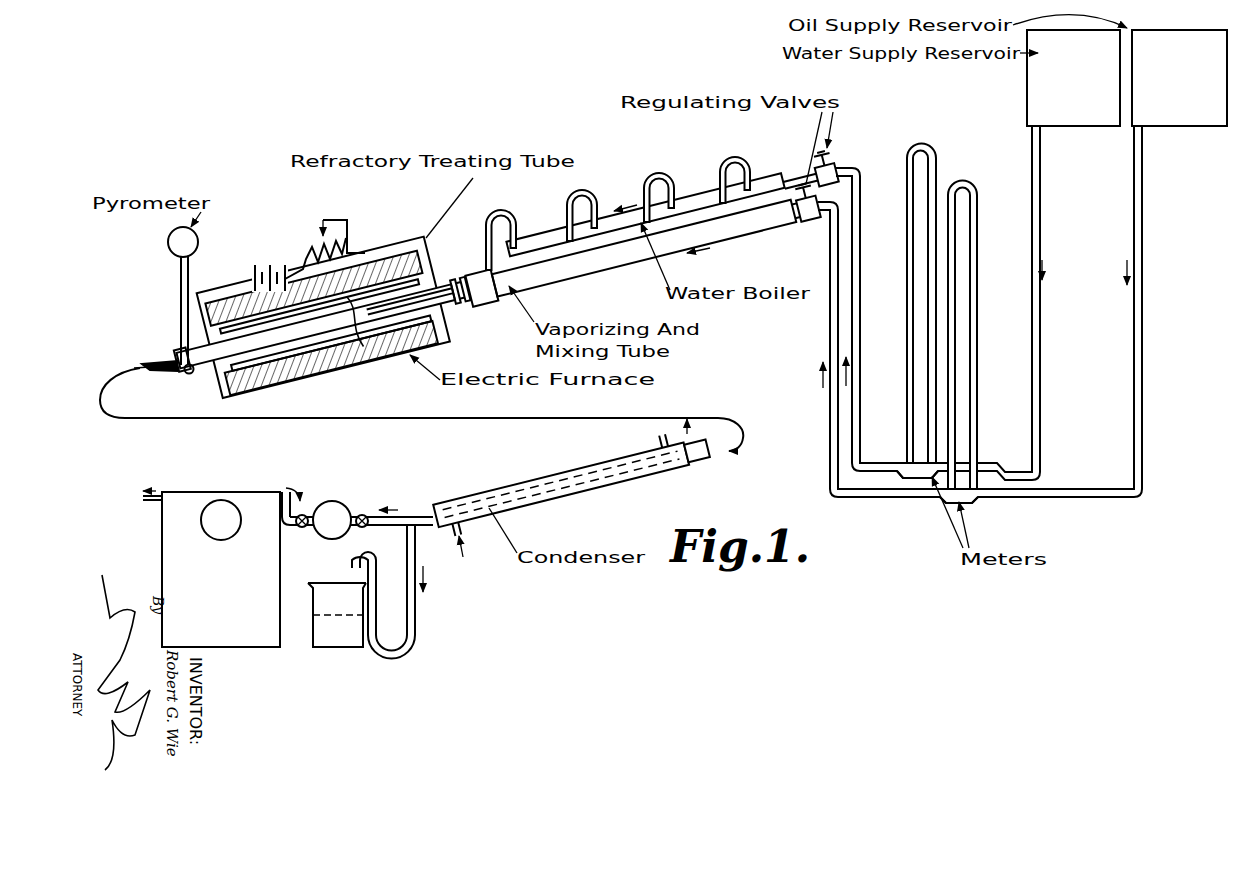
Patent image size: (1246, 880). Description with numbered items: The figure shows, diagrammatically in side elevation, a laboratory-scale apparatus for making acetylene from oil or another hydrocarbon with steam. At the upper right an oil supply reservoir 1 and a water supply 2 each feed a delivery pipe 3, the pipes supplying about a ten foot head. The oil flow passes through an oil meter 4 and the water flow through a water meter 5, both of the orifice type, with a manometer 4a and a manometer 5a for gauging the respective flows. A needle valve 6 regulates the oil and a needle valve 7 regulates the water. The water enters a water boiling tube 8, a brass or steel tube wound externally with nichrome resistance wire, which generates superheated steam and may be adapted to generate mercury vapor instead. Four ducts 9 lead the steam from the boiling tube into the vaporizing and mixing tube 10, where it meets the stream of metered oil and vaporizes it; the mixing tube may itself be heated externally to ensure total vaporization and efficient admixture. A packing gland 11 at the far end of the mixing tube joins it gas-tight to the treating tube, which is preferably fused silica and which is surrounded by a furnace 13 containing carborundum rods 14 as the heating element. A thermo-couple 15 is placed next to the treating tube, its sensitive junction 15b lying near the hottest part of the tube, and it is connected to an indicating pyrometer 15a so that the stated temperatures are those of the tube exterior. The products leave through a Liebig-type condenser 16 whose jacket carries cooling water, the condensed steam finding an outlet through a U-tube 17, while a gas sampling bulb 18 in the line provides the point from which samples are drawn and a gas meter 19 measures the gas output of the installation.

The oil supply reservoir 1 is at (1179, 78).
The water supply 2 is at (1073, 78).
The delivery pipes 3 is at (1040, 338).
The oil meter 4 is at (977, 490).
The manometer 4a is at (977, 213).
The water meter 5 is at (906, 462).
The manometer 5a is at (937, 149).
The needle valve 6 is at (807, 202).
The needle valve 7 is at (824, 168).
The water boiling tube 8 is at (661, 211).
The ducts 9 is at (501, 210).
The vaporizing and mixing tube 10 is at (646, 248).
The packing gland 11 is at (481, 287).
The furnace 13 is at (410, 301).
The carborundum rods 14 is at (331, 347).
The thermo-couple 15 is at (182, 360).
The indicating pyrometer 15a is at (192, 241).
The sensitive junction 15b is at (315, 326).
The condenser 16 is at (607, 494).
The U-tube 17 is at (415, 628).
The gas sampling bulb 18 is at (331, 503).
The gas meter 19 is at (222, 633).